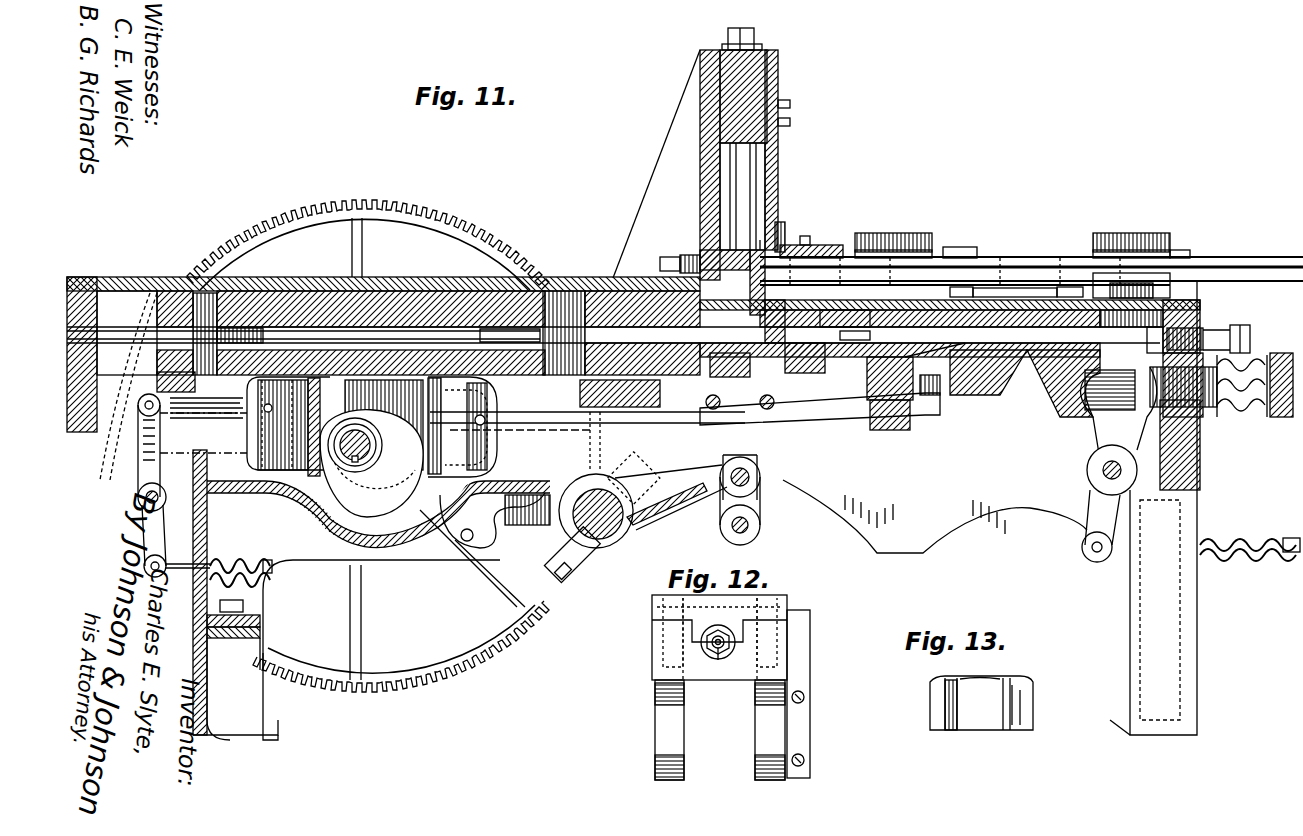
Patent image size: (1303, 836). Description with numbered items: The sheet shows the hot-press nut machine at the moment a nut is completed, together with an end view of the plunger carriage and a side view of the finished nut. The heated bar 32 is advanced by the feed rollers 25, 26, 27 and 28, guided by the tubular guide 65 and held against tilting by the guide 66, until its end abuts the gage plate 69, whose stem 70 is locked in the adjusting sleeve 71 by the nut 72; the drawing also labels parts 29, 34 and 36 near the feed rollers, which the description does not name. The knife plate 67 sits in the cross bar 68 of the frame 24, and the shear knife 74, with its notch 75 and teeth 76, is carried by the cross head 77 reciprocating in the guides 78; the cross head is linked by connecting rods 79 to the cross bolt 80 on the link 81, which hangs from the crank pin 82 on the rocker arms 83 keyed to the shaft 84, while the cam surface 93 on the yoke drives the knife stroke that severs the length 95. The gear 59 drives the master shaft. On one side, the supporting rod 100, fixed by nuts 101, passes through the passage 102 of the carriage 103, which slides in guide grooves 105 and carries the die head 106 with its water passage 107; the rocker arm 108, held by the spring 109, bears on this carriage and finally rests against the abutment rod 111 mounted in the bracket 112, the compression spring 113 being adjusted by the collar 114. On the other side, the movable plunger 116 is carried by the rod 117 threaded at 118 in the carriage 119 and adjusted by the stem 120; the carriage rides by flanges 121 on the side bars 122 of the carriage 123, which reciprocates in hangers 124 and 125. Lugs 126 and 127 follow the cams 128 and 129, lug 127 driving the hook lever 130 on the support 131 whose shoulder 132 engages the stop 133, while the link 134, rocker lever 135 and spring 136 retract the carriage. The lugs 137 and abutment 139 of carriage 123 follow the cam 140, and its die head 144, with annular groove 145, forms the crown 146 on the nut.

In FIG. 11, the frame 24 is at (297, 575).
In FIG. 11, the feed roller 25 is at (830, 375).
In FIG. 11, the feed roller 26 is at (1178, 256).
In FIG. 11, the feed roller 27 is at (818, 300).
In FIG. 11, the feed roller 28 is at (950, 247).
In FIG. 11, the bracket 29 is at (920, 360).
In FIG. 11, the bar 32 is at (1245, 262).
In FIG. 11, the gear 34 is at (1110, 233).
In FIG. 11, the gear 36 is at (888, 233).
In FIG. 11, the gear 59 is at (322, 212).
In FIG. 11, the tubular guide 65 is at (1015, 258).
In FIG. 11, the guide 66 is at (830, 245).
In FIG. 11, the knife plate 67 is at (766, 321).
In FIG. 11, the cross bar 68 is at (780, 384).
In FIG. 11, the gage plate 69 is at (765, 240).
In FIG. 11, the stem 70 is at (660, 266).
In FIG. 11, the adjusting sleeve 71 is at (700, 255).
In FIG. 11, the nut 72 is at (680, 260).
In FIG. 11, the shear knife 74 is at (785, 230).
In FIG. 11, the notch 75 is at (776, 152).
In FIG. 11, the teeth 76 is at (780, 244).
In FIG. 11, the cross head 77 is at (767, 60).
In FIG. 11, the guides 78 is at (700, 141).
In FIG. 11, the connecting rods 79 is at (745, 27).
In FIG. 11, the cross bolt 80 is at (762, 526).
In FIG. 11, the link 81 is at (762, 502).
In FIG. 11, the crank pin 82 is at (762, 476).
In FIG. 11, the rocker arms 83 is at (680, 505).
In FIG. 11, the shaft 84 is at (612, 540).
In FIG. 11, the cam surface 93 is at (374, 439).
In FIG. 13, the severed length 95 is at (981, 703).
In FIG. 11, the supporting rod 100 is at (1250, 338).
In FIG. 11, the nuts 101 is at (1225, 325).
In FIG. 11, the passage 102 is at (1015, 294).
In FIG. 11, the carriage 103 is at (1030, 365).
In FIG. 11, the guide grooves 105 is at (1190, 305).
In FIG. 11, the die head 106 is at (848, 357).
In FIG. 11, the water passage 107 is at (900, 332).
In FIG. 11, the rocker arm 108 is at (1092, 440).
In FIG. 11, the spring 109 is at (1250, 528).
In FIG. 11, the abutment rod 111 is at (1160, 420).
In FIG. 11, the supporting bracket 112 is at (1280, 376).
In FIG. 11, the compression spring 113 is at (1240, 412).
In FIG. 11, the collar 114 is at (1200, 412).
In FIG. 11, the movable piercing plunger 116 is at (603, 292).
In FIG. 11, the rod 117 is at (405, 293).
In FIG. 11, the thread 118 is at (245, 290).
In FIG. 11, the carriage 119 is at (310, 293).
In FIG. 11, the adjusting stem 120 is at (140, 290).
In FIG. 11, the supporting flanges 121 is at (345, 555).
In FIG. 11, the side bars 122 is at (178, 276).
In FIG. 11, the carriage 123 is at (157, 382).
In FIG. 12, the carriage 123 is at (652, 627).
In FIG. 11, the hanger 124 is at (648, 423).
In FIG. 11, the hanger 125 is at (160, 380).
In FIG. 11, the lug 126 is at (288, 423).
In FIG. 11, the lug 127 is at (500, 400).
In FIG. 11, the cam 128 is at (400, 480).
In FIG. 11, the cam 129 is at (452, 426).
In FIG. 11, the hook lever 130 is at (617, 441).
In FIG. 11, the support 131 is at (885, 430).
In FIG. 11, the shoulder 132 is at (942, 410).
In FIG. 11, the stop 133 is at (930, 415).
In FIG. 11, the link 134 is at (225, 432).
In FIG. 11, the rocker lever 135 is at (160, 470).
In FIG. 11, the spring 136 is at (235, 543).
In FIG. 11, the lugs 137 is at (368, 427).
In FIG. 12, the lugs 137 is at (755, 753).
In FIG. 12, the abutment 139 is at (805, 745).
In FIG. 11, the cam 140 is at (384, 423).
In FIG. 11, the die head 144 is at (520, 440).
In FIG. 12, the die head 144 is at (703, 647).
In FIG. 12, the annular groove 145 is at (718, 660).
In FIG. 13, the crown 146 is at (1020, 680).